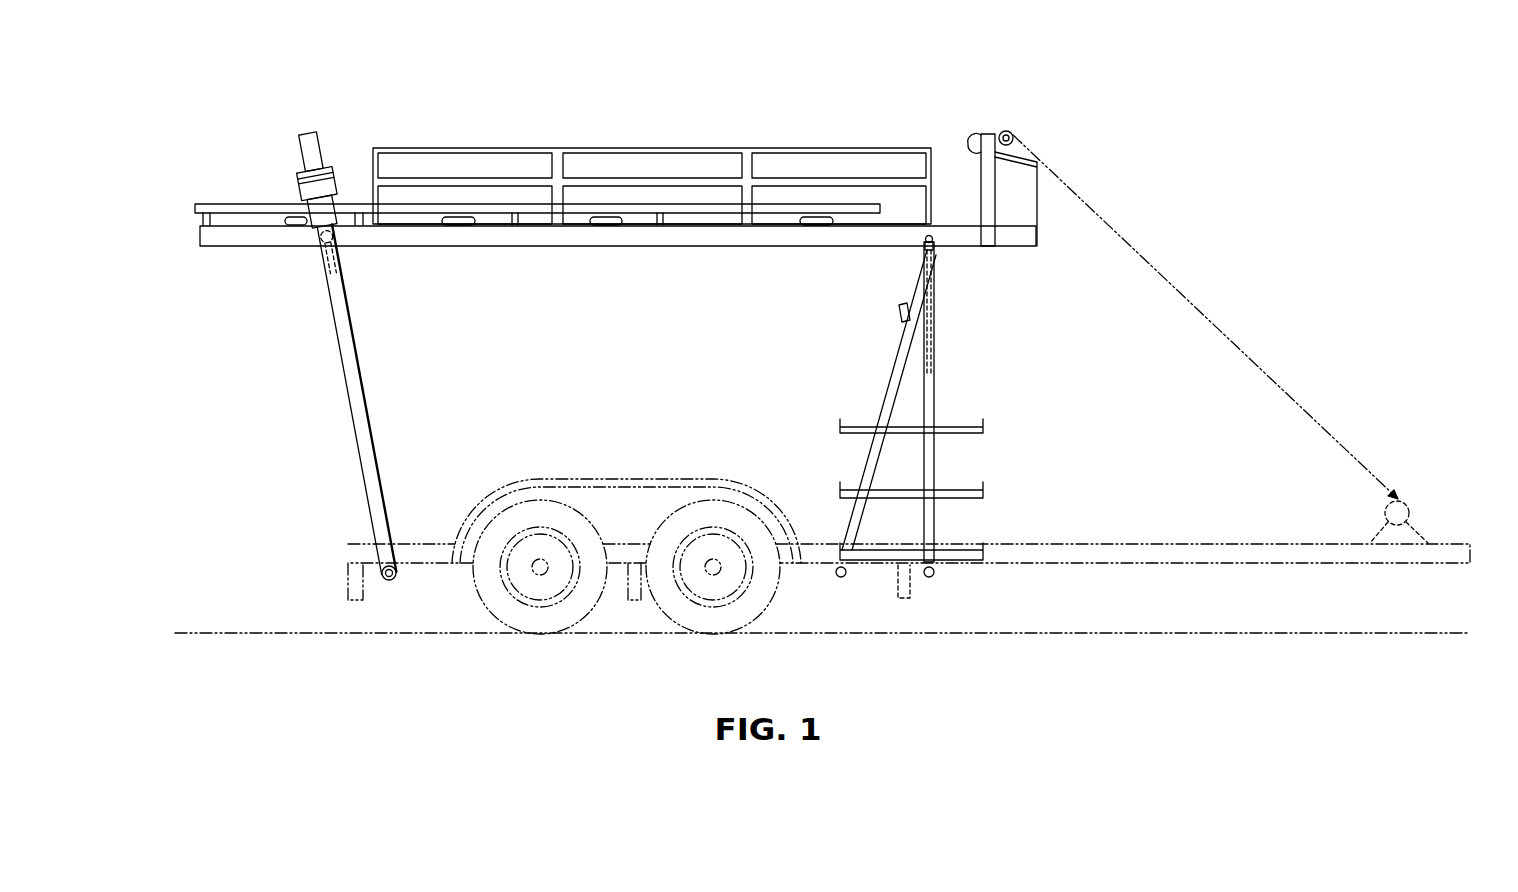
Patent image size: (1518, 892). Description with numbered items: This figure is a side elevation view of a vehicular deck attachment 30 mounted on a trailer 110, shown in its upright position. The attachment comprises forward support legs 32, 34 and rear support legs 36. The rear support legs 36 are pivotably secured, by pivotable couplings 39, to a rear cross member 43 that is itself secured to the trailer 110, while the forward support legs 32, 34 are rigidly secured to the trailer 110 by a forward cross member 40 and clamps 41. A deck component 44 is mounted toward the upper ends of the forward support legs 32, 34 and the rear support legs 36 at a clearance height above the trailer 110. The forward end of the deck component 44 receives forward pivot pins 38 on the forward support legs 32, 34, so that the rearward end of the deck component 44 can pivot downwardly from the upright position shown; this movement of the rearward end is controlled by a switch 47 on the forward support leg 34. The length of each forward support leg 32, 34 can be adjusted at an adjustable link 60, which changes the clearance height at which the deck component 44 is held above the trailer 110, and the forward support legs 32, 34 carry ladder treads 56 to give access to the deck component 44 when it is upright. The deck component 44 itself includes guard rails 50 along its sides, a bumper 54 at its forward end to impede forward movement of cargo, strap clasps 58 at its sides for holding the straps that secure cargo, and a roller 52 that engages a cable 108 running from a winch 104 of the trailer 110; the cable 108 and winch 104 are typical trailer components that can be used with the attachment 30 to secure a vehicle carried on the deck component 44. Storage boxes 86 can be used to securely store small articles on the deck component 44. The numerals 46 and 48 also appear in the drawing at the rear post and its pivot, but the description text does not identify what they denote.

The vehicular deck attachment 30 is at (462, 102).
The forward support leg 32 is at (935, 366).
The forward support leg 34 is at (890, 375).
The rear support legs 36 is at (353, 365).
The forward pivot pins 38 is at (926, 241).
The pivotable couplings 39 is at (392, 580).
The forward cross member 40 is at (928, 580).
The clamps 41 is at (938, 574).
The rear cross member 43 is at (382, 575).
The deck component 44 is at (625, 236).
The front post 46 is at (306, 178).
The switch 47 is at (898, 314).
The pivot joint 48 is at (325, 258).
The guard rails 50 is at (640, 148).
The roller 52 is at (1011, 135).
The bumper 54 is at (978, 144).
The ladder treads 56 is at (945, 497).
The strap clasps 58 is at (815, 226).
The adjustable link 60 is at (936, 246).
The storage boxes 86 is at (1028, 213).
The winch 104 is at (1408, 500).
The cable 108 is at (1233, 333).
The trailer 110 is at (1243, 563).